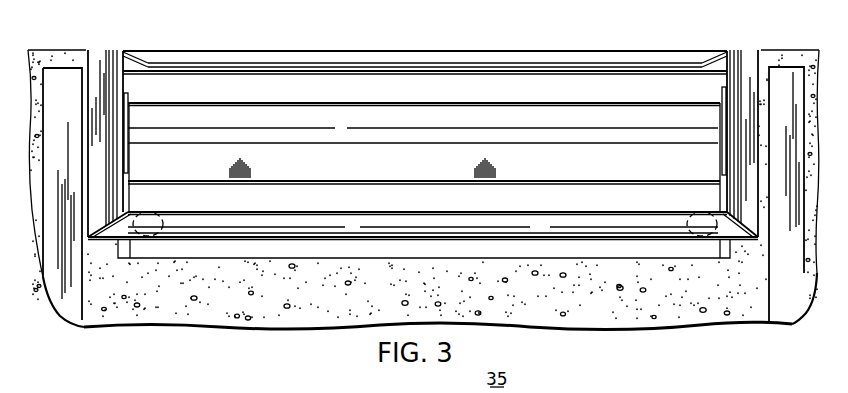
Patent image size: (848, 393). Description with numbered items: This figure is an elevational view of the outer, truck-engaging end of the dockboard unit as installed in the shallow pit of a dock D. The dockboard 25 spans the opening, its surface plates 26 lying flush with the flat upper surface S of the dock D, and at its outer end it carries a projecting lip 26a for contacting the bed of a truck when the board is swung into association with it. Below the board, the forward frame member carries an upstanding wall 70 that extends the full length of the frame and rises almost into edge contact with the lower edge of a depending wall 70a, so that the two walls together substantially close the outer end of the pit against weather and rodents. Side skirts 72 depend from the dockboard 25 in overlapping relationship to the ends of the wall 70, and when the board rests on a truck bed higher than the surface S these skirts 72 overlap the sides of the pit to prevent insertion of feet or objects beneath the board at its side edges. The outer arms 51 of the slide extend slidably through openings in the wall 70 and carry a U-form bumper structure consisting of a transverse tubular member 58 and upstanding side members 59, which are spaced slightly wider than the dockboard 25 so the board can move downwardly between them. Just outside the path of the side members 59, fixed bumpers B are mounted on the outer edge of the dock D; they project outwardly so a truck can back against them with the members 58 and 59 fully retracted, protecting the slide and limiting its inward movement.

The upper surface of dock S is at (64, 50).
The fixed bumpers B is at (67, 305).
The dock D is at (313, 314).
The dockboard 25 is at (425, 118).
The surface plates 26 is at (237, 50).
The projecting lip 26a is at (293, 60).
The upstanding side members 59 is at (108, 90).
The side skirts 72 is at (129, 160).
The depending wall 70a is at (322, 126).
The transverse tubular member 58 is at (562, 233).
The outer arms of slide 51 is at (162, 217).
The upstanding wall 70 is at (293, 247).